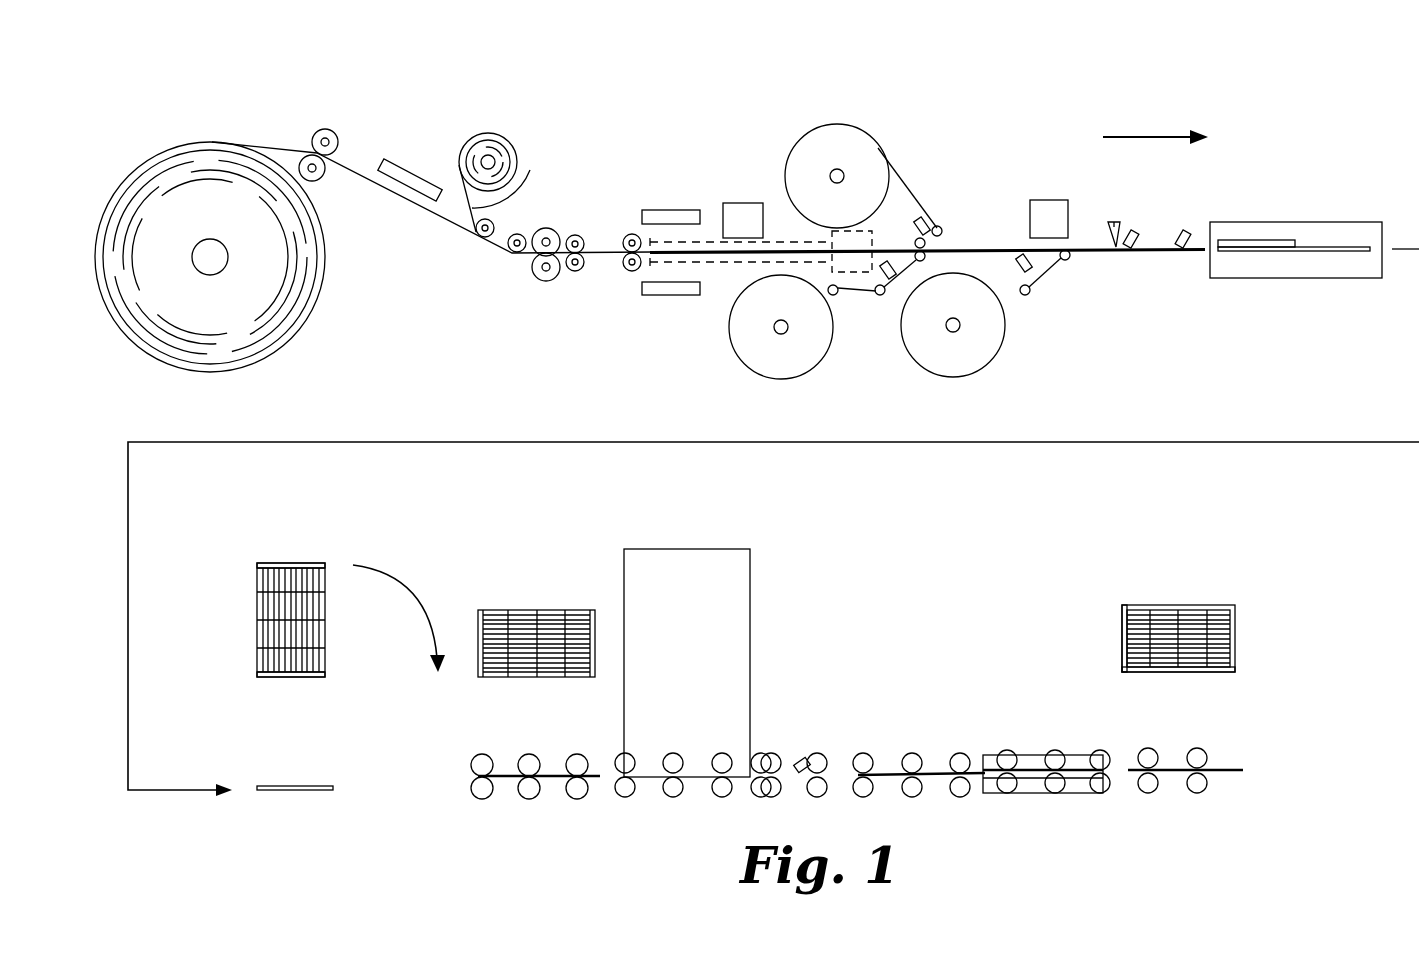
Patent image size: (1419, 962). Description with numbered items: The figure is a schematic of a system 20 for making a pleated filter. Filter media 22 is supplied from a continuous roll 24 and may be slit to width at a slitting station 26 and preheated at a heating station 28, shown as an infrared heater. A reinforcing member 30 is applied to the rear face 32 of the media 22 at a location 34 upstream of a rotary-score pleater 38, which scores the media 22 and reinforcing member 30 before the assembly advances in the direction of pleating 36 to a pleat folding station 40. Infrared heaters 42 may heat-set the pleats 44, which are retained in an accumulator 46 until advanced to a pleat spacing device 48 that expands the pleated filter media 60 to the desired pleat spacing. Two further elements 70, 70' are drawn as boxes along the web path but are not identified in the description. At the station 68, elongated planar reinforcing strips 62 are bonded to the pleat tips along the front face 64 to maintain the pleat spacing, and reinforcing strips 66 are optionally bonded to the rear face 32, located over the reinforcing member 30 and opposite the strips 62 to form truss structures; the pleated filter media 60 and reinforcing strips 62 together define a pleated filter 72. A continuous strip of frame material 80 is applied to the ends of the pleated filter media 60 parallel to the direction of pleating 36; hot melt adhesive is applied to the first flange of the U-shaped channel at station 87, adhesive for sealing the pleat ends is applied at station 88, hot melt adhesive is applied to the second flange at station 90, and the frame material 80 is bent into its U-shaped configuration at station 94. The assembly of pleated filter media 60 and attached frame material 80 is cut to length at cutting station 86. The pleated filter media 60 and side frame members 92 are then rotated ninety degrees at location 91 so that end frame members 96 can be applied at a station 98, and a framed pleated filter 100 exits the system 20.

The system 20 is at (1304, 105).
The filter media 22 is at (263, 146).
The continuous roll 24 is at (150, 337).
The slitting station 26 is at (322, 128).
The heating station 28 is at (378, 163).
The reinforcing member 30 is at (514, 178).
The rear face 32 is at (512, 218).
The location 34 is at (472, 248).
The direction of pleating 36 is at (1141, 133).
The rotary-score pleater 38 is at (524, 291).
The pleat folding station 40 is at (622, 286).
The infrared heaters 42 is at (657, 208).
The pleats 44 is at (702, 258).
The accumulator 46 is at (786, 230).
The pleat spacing device 48 is at (863, 239).
The pleated filter media 60 is at (983, 246).
The reinforcing strips 62 is at (846, 296).
The front face 64 is at (735, 270).
The reinforcing strips 66 is at (900, 165).
The station 68 is at (953, 222).
The printing station 70 is at (737, 187).
The second printing station 70' is at (1050, 194).
The pleated filter 72 is at (936, 260).
The frame material 80 is at (1013, 307).
The cutting station 86 is at (1113, 228).
The station 87 is at (1033, 267).
The station 88 is at (1138, 232).
The station 90 is at (1183, 232).
The location 91 is at (391, 572).
The side frame members 92 is at (283, 563).
The station 94 is at (1328, 226).
The end frame members 96 is at (1163, 672).
The station 98 is at (677, 558).
The pleated filter 100 is at (1163, 617).